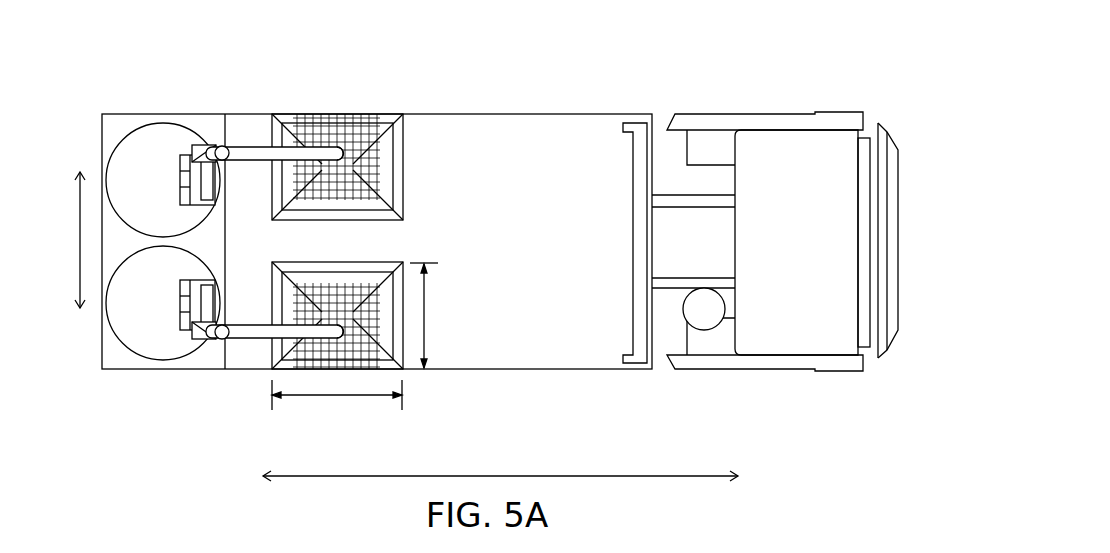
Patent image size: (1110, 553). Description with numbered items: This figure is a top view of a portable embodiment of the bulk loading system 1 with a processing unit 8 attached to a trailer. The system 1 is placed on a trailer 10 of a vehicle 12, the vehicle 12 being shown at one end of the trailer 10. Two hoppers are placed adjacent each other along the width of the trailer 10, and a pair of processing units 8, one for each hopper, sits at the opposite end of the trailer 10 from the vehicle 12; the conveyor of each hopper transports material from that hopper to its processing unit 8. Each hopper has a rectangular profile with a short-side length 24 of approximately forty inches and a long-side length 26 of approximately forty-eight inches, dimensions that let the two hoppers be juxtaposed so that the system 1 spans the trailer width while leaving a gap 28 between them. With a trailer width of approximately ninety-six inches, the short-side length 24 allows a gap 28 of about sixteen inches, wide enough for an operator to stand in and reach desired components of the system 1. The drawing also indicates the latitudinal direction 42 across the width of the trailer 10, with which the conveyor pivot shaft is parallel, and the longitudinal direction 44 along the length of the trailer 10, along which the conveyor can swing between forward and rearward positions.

The system 1 is at (339, 84).
The processing unit 8 is at (134, 127).
The trailer 10 is at (557, 126).
The vehicle 12 is at (776, 147).
The short-side length 24 is at (425, 317).
The long-side length 26 is at (335, 396).
The gap 28 is at (384, 243).
The latitudinal direction 42 is at (79, 255).
The longitudinal direction 44 is at (590, 474).